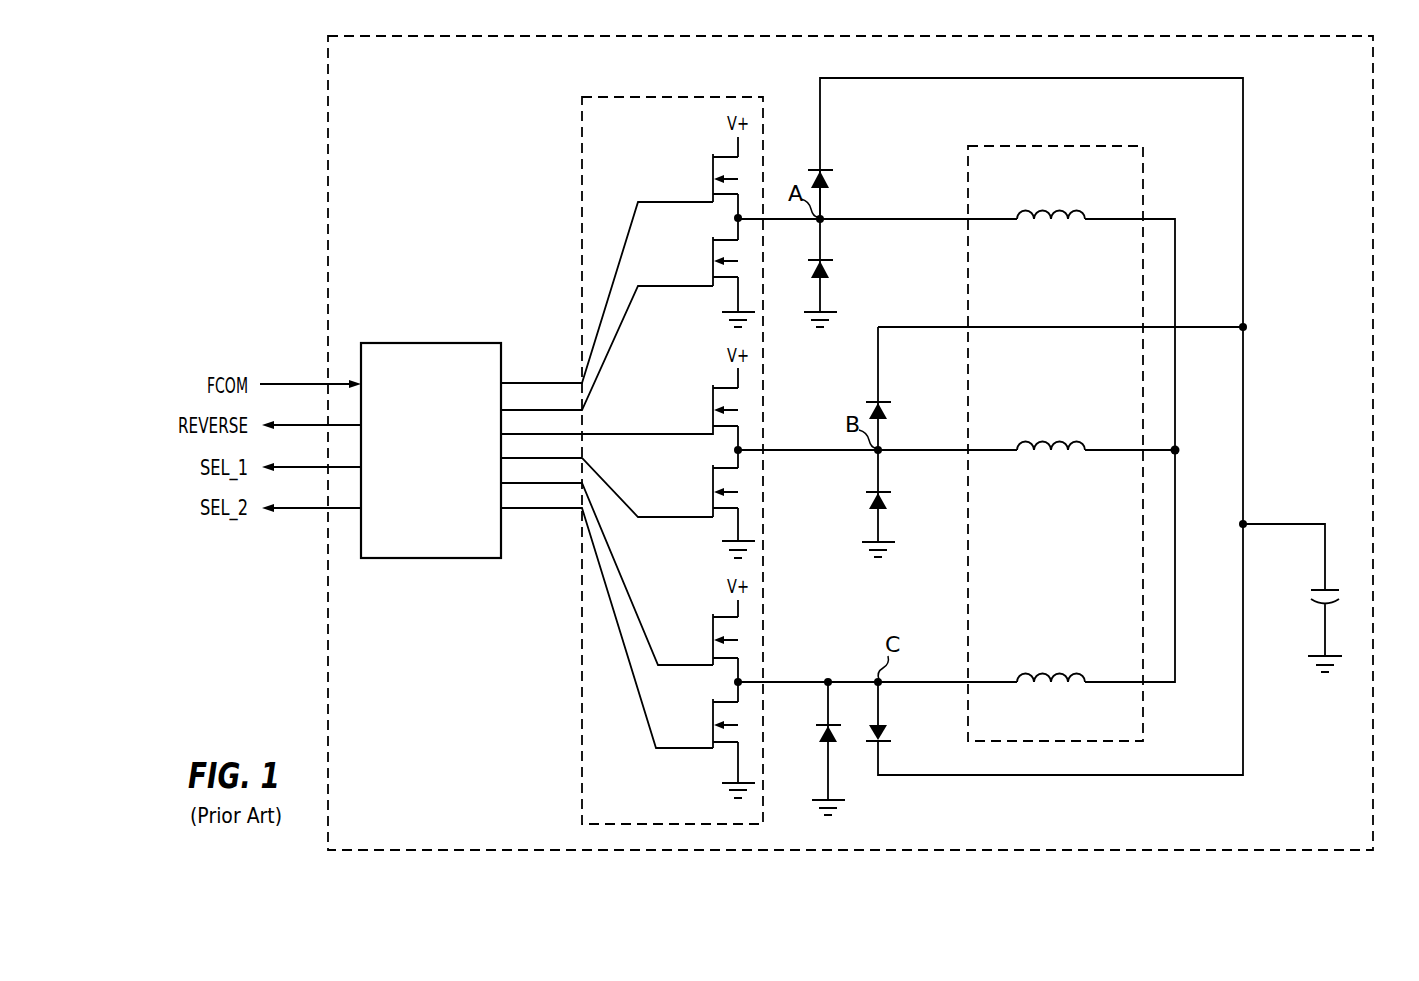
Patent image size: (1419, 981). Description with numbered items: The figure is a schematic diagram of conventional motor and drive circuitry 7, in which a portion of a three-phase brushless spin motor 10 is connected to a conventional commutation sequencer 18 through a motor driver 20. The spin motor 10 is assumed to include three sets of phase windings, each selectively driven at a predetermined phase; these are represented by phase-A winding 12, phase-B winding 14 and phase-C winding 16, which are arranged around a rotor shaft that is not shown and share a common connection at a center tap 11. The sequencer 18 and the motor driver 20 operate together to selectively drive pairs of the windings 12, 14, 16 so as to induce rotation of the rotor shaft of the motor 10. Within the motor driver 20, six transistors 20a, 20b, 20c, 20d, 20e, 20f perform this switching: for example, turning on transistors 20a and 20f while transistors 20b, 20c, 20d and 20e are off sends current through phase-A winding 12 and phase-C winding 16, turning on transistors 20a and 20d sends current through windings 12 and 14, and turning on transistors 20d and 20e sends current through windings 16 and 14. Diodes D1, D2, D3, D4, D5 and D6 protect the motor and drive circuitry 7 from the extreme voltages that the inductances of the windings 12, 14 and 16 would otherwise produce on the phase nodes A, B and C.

The motor and drive circuitry 7 is at (1375, 87).
The three-phase brushless spin motor 10 is at (1145, 178).
The center tap 11 is at (1180, 448).
The phase-A winding 12 is at (1045, 226).
The phase-B winding 14 is at (1045, 457).
The phase-C winding 16 is at (1045, 689).
The commutation sequencer 18 is at (471, 537).
The motor driver 20 is at (582, 770).
The transistor 20a is at (705, 178).
The transistor 20b is at (705, 261).
The transistor 20c is at (705, 410).
The transistor 20d is at (705, 491).
The transistor 20e is at (705, 639).
The transistor 20f is at (705, 723).
The diode D1 is at (834, 182).
The diode D2 is at (834, 270).
The diode D3 is at (890, 412).
The diode D4 is at (890, 501).
The diode D5 is at (818, 736).
The diode D6 is at (890, 736).